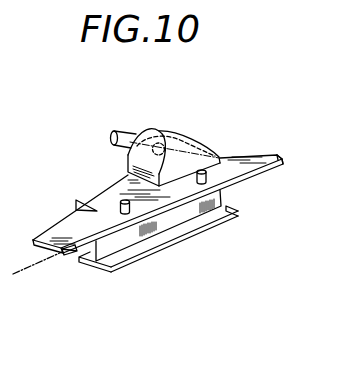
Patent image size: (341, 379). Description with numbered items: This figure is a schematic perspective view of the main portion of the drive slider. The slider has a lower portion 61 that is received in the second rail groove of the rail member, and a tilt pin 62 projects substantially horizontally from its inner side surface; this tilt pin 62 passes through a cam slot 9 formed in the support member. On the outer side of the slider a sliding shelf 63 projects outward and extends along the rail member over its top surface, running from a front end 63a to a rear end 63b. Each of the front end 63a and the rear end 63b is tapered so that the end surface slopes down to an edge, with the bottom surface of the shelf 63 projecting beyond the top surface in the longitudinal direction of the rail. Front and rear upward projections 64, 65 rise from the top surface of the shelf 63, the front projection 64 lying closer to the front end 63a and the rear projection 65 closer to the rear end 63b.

The cam slot 9 is at (29, 276).
The lower portion 61 is at (163, 246).
The tilt pin 62 is at (125, 134).
The sliding shelf 63 is at (78, 231).
The front end 63a is at (44, 251).
The rear end 63b is at (263, 148).
The front upward projection 64 is at (125, 214).
The rear upward projection 65 is at (210, 173).